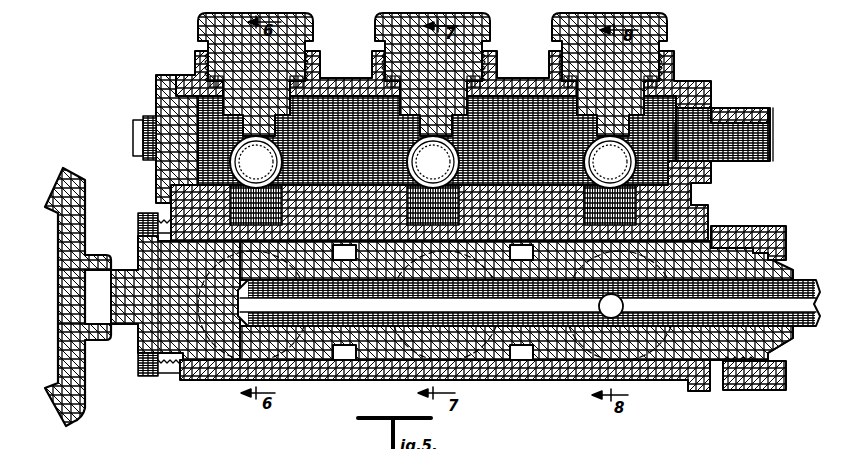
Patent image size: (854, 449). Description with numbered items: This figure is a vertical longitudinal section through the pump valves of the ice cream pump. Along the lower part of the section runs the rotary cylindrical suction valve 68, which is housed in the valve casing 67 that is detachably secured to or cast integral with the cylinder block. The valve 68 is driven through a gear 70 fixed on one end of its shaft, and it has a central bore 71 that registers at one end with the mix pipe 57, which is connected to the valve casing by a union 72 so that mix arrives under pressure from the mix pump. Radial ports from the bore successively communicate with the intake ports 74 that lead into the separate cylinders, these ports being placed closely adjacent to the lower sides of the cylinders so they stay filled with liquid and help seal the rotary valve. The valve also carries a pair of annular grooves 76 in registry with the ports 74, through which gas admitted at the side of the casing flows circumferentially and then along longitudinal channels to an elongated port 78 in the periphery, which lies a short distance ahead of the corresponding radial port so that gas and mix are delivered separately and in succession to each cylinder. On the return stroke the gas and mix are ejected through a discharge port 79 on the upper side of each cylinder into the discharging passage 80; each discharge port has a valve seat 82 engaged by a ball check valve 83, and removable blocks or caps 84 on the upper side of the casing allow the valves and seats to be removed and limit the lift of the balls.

The pipe 57 is at (782, 336).
The valve casing 67 is at (563, 354).
The rotary cylindrical suction valve 68 is at (194, 337).
The gear 70 is at (72, 398).
The central bore 71 is at (300, 355).
The union 72 is at (748, 383).
The ports 74 is at (422, 318).
The annular grooves 76 is at (338, 353).
The elongated port 78 is at (210, 345).
The discharge port 79 is at (392, 207).
The discharging passage 80 is at (497, 110).
The valve seat 82 is at (232, 165).
The ball check valve 83 is at (272, 152).
The removable blocks or caps 84 is at (368, 22).